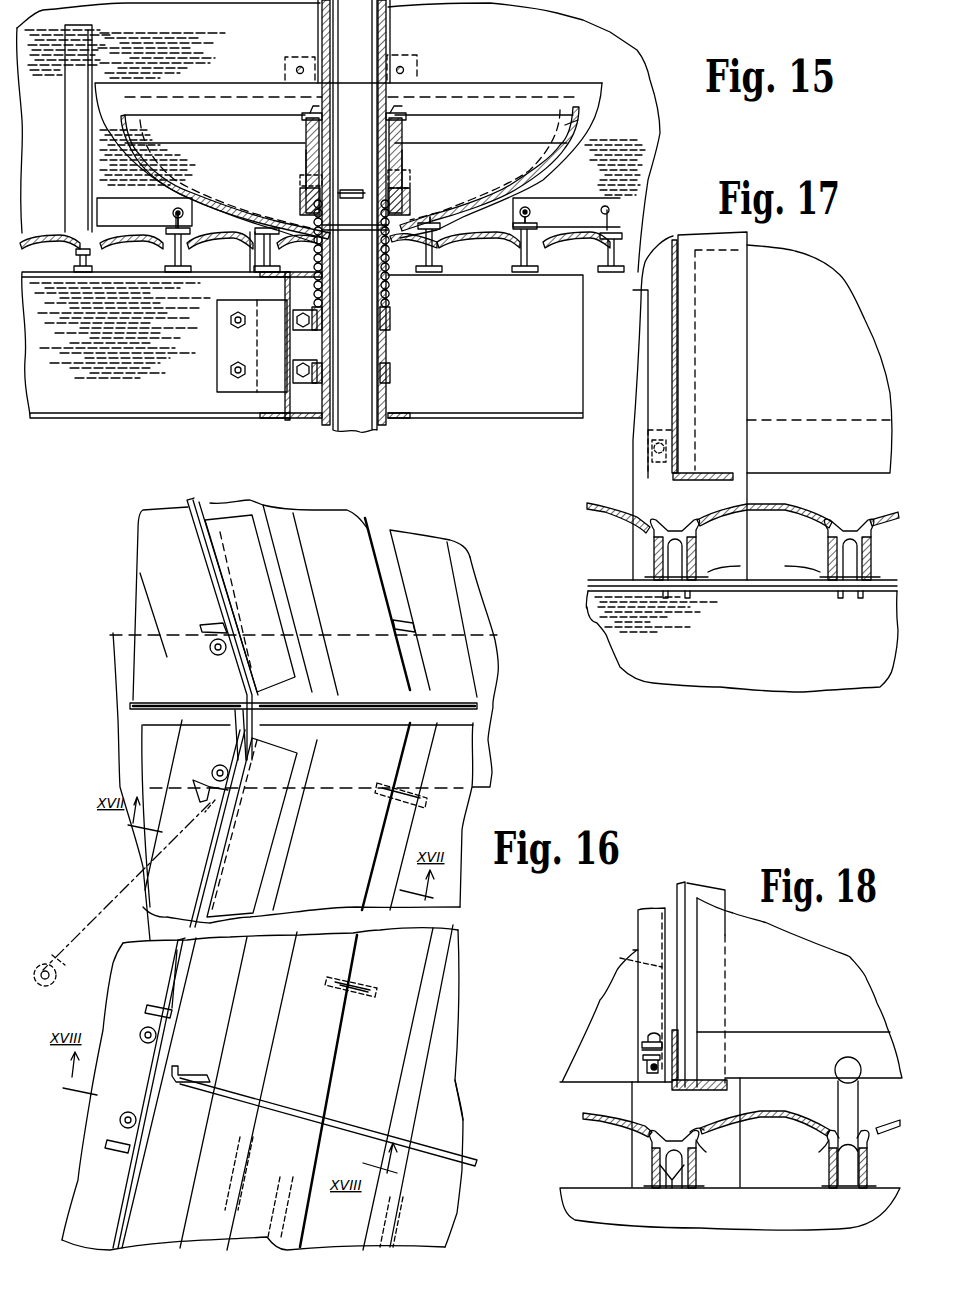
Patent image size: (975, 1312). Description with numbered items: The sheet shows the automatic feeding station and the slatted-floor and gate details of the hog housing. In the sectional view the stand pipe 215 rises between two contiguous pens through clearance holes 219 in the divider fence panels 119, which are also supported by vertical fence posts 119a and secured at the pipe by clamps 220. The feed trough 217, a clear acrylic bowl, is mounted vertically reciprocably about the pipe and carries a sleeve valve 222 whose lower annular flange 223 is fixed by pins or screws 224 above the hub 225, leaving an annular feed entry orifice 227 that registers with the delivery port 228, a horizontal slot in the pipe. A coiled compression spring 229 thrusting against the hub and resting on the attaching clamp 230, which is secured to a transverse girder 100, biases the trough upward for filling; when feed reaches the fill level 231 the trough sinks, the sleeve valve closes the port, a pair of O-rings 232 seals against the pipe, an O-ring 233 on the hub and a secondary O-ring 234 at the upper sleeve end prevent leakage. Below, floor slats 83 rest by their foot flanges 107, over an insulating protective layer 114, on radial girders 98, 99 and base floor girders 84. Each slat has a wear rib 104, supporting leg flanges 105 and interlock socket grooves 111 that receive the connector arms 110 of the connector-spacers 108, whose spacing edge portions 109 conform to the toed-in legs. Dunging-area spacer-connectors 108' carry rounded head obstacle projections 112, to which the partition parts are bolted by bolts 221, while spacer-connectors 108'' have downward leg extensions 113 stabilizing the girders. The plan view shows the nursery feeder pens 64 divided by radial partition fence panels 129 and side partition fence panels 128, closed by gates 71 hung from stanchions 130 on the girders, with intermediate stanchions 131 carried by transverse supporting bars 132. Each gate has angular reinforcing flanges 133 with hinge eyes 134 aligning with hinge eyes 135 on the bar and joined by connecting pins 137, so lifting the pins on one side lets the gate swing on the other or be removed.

In FIG. 15, the divider fence panel 119 is at (625, 58).
In FIG. 15, the vertical fence post 119a is at (88, 47).
In FIG. 15, the stand pipe 215 is at (320, 30).
In FIG. 15, the clearance hole 219 is at (552, 82).
In FIG. 15, the clamp 220 is at (405, 56).
In FIG. 15, the feed trough 217 is at (575, 140).
In FIG. 15, the bolt 221 is at (172, 213).
In FIG. 15, the sleeve valve 222 is at (306, 136).
In FIG. 15, the annular flange 223 is at (400, 196).
In FIG. 15, the pin or screw 224 is at (305, 190).
In FIG. 15, the hub 225 is at (410, 207).
In FIG. 15, the annular feed entry orifice 227 is at (305, 210).
In FIG. 15, the delivery port 228 is at (390, 165).
In FIG. 15, the coiled compression spring 229 is at (390, 290).
In FIG. 15, the attaching clamp 230 is at (392, 368).
In FIG. 15, the fill level 231 is at (207, 143).
In FIG. 15, the sealing O-ring 232 is at (354, 208).
In FIG. 15, the O-ring 233 is at (355, 243).
In FIG. 15, the secondary sealing O-ring 234 is at (392, 116).
In FIG. 15, the floor slat 83 is at (98, 245).
In FIG. 16, the floor slat 83 is at (307, 1243).
In FIG. 17, the floor slat 83 is at (620, 513).
In FIG. 18, the floor slat 83 is at (783, 1124).
In FIG. 16, the floor girder 84 is at (490, 648).
In FIG. 17, the floor girder 84 is at (783, 672).
In FIG. 15, the radial girder 98 is at (462, 390).
In FIG. 15, the radial girder 99 is at (148, 405).
In FIG. 15, the transverse girder 100 is at (220, 325).
In FIG. 18, the connector-spacer 108 is at (674, 1146).
In FIG. 15, the spacer-connector with head projection 108' is at (322, 257).
In FIG. 16, the spacer-connector with head projection 108' is at (371, 980).
In FIG. 18, the spacer-connector with head projection 108' is at (862, 1141).
In FIG. 16, the spacer-connector with leg extensions 108'' is at (397, 714).
In FIG. 17, the spacer-connector with leg extensions 108'' is at (766, 534).
In FIG. 15, the rounded head obstacle projection 112 is at (190, 224).
In FIG. 16, the rounded head obstacle projection 112 is at (357, 990).
In FIG. 18, the rounded head obstacle projection 112 is at (848, 1057).
In FIG. 17, the foot flange 107 is at (820, 577).
In FIG. 17, the downward leg extension 113 is at (666, 600).
In FIG. 17, the insulating protective layer 114 is at (602, 580).
In FIG. 16, the gate 71 is at (192, 503).
In FIG. 17, the gate 71 is at (679, 380).
In FIG. 18, the gate 71 is at (620, 958).
In FIG. 16, the side partition fence panel 128 is at (130, 708).
In FIG. 17, the side partition fence panel 128 is at (612, 413).
In FIG. 16, the radial partition fence panel 129 is at (478, 700).
In FIG. 17, the radial partition fence panel 129 is at (843, 313).
In FIG. 18, the radial partition fence panel 129 is at (828, 960).
In FIG. 16, the stanchion 130 is at (247, 713).
In FIG. 17, the stanchion 130 is at (735, 320).
In FIG. 16, the stanchion 131 is at (187, 1068).
In FIG. 18, the stanchion 131 is at (679, 884).
In FIG. 16, the transverse supporting bar 132 is at (265, 625).
In FIG. 17, the transverse supporting bar 132 is at (700, 470).
In FIG. 18, the transverse supporting bar 132 is at (672, 1087).
In FIG. 16, the angular reinforcing flange 133 is at (213, 655).
In FIG. 18, the angular reinforcing flange 133 is at (640, 1008).
In FIG. 18, the hinge eye 134 is at (642, 1046).
In FIG. 18, the hinge eye 135 is at (647, 1060).
In FIG. 18, the connecting pin 137 is at (663, 1070).
In FIG. 18, the wear rib 104 is at (770, 1112).
In FIG. 18, the supporting leg flange 105 is at (830, 1173).
In FIG. 18, the spacing edge portion 109 is at (676, 1188).
In FIG. 18, the connector arm 110 is at (710, 1115).
In FIG. 18, the interlock socket groove 111 is at (704, 1138).
In FIG. 16, the nursery feeder pen 64 is at (458, 1182).